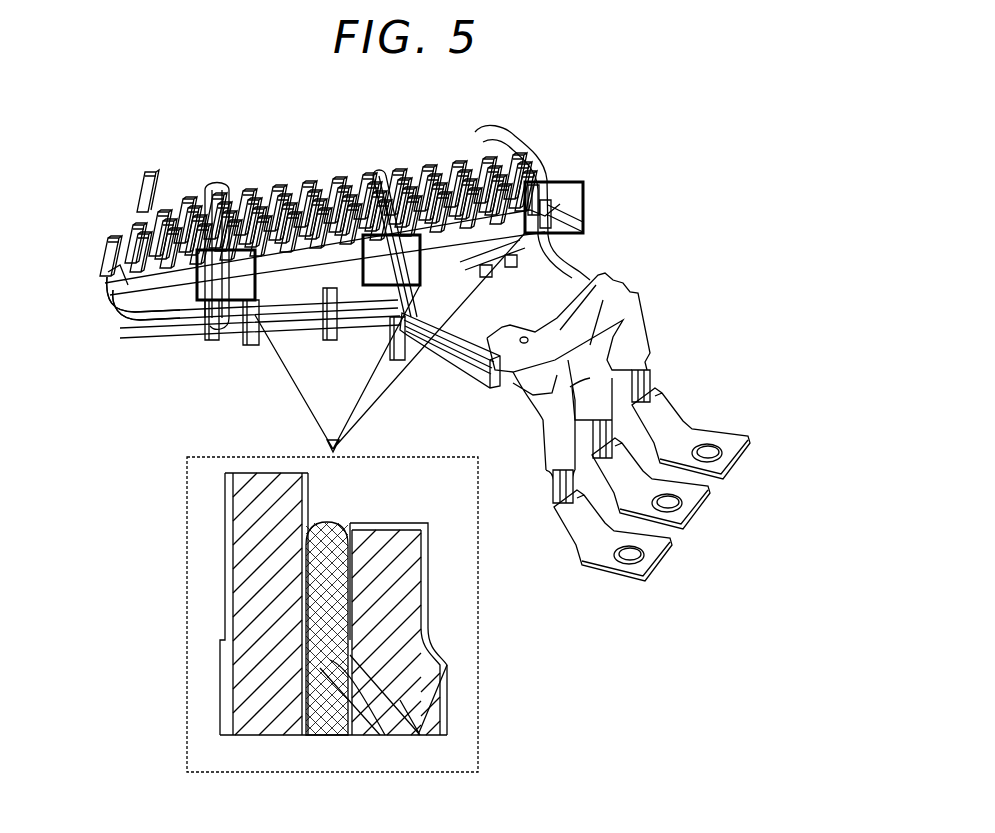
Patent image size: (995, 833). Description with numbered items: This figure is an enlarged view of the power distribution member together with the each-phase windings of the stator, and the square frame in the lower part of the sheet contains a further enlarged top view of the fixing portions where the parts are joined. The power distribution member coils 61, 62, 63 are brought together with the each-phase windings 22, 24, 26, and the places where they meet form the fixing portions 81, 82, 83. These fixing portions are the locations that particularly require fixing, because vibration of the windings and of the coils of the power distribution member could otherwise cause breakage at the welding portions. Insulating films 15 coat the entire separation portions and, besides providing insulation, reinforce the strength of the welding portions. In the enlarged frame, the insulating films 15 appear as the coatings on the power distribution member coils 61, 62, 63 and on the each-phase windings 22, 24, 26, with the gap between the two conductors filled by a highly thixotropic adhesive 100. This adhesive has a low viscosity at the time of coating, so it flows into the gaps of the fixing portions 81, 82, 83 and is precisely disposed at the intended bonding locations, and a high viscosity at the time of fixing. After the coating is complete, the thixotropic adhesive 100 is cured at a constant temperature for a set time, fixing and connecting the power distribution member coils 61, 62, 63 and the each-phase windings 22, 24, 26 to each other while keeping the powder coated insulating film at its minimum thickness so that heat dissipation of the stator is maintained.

The insulating film 15 is at (226, 483).
The each-phase winding 22 is at (562, 200).
The each-phase winding 24 is at (237, 313).
The each-phase winding 26 is at (480, 267).
The power distribution member coil 61 is at (535, 182).
The power distribution member coil 62 is at (368, 215).
The power distribution member coil 63 is at (203, 215).
The fixing portion 81 is at (577, 228).
The fixing portion 82 is at (338, 336).
The fixing portion 83 is at (187, 290).
The thixotropic adhesive 100 is at (333, 528).